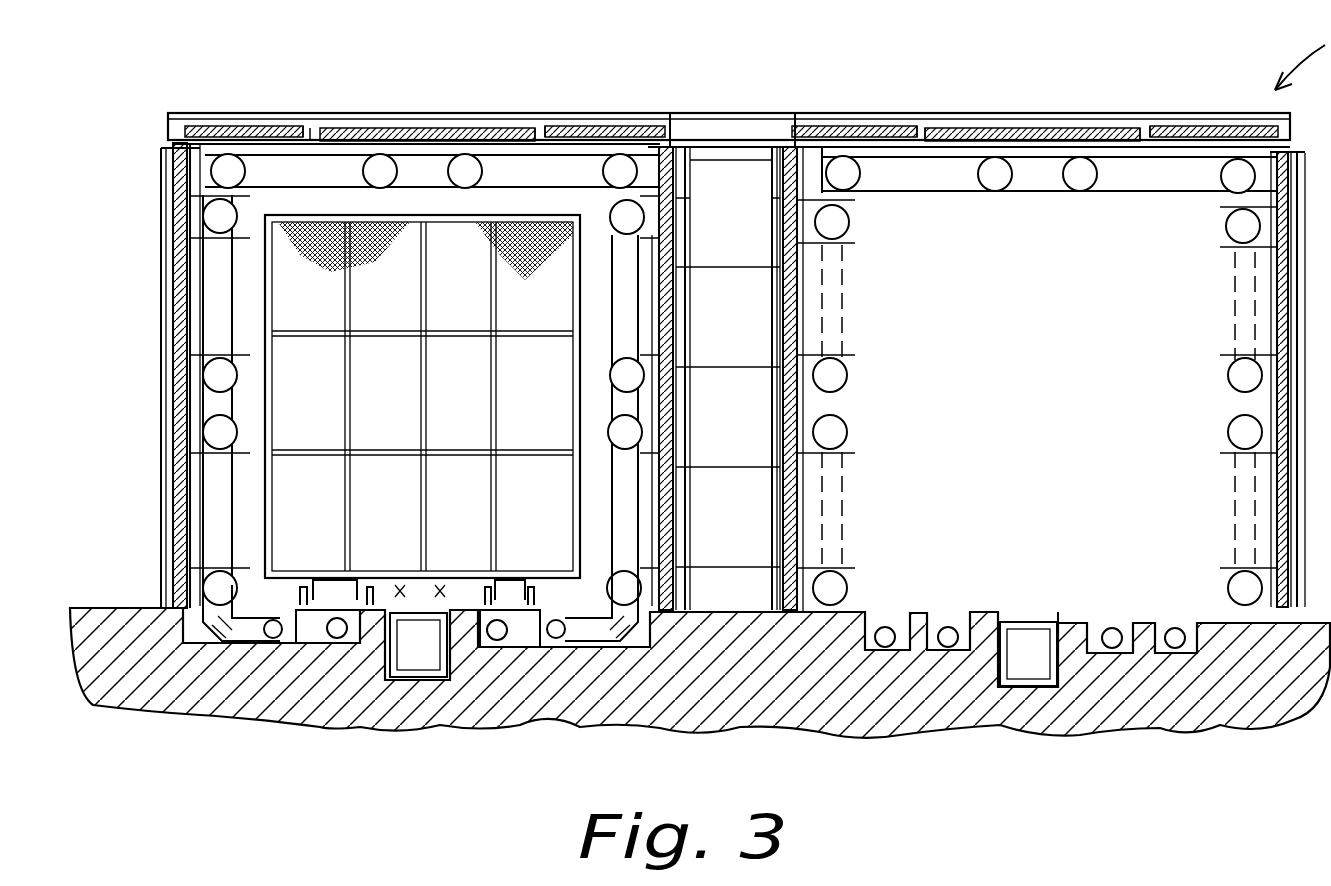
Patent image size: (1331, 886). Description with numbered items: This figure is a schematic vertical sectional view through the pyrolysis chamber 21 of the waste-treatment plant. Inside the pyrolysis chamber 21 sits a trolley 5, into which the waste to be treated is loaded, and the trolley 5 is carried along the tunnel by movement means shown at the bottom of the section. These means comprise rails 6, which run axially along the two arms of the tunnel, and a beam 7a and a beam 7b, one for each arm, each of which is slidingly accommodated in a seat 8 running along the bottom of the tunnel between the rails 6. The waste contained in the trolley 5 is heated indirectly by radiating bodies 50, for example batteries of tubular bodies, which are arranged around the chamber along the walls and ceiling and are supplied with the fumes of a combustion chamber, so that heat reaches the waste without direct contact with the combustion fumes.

The trolley 5 is at (320, 222).
The pyrolysis chamber 21 is at (530, 205).
The radiating bodies 50 is at (380, 168).
The rails 6 is at (290, 600).
The beam 7a is at (415, 672).
The beam 7b is at (1025, 684).
The seat 8 is at (345, 665).